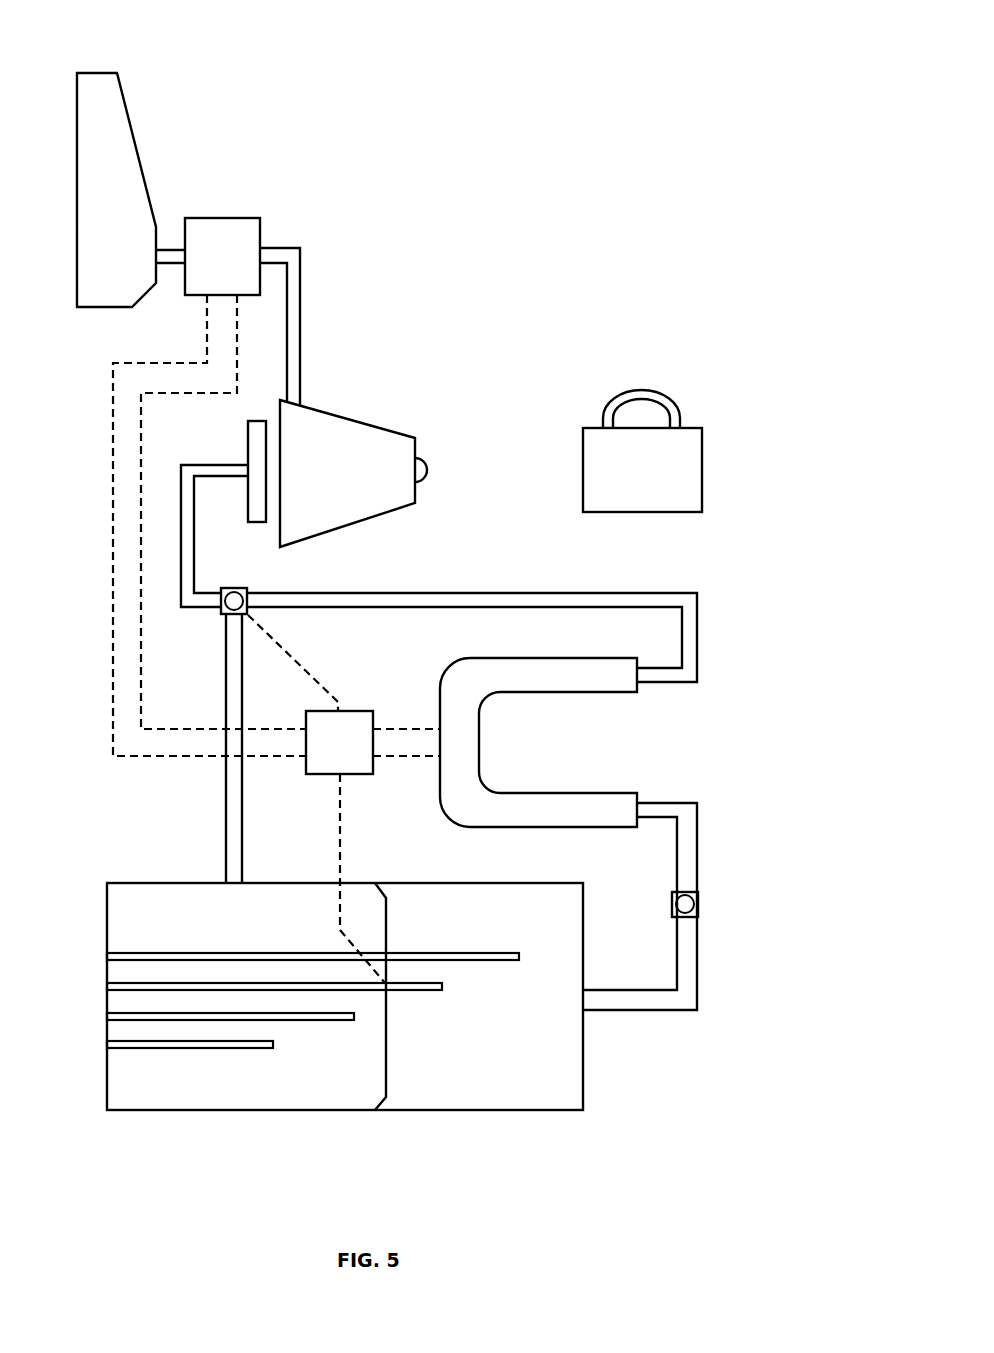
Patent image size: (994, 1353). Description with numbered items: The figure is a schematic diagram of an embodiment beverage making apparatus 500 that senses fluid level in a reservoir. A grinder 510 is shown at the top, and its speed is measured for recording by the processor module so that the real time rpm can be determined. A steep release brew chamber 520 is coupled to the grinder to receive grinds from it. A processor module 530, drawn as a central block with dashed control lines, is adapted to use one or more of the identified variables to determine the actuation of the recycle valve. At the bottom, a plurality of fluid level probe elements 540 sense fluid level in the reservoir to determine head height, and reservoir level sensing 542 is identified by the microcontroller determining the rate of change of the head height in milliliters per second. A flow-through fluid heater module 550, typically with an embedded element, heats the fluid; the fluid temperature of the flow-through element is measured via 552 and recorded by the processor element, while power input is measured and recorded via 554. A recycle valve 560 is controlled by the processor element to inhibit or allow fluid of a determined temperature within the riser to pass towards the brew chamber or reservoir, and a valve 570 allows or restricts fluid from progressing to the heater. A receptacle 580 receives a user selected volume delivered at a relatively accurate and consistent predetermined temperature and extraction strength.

The beverage making apparatus 500 is at (164, 73).
The grinder 510 is at (226, 232).
The steep release brew chamber 520 is at (371, 436).
The processor module 530 is at (345, 730).
The fluid level probe elements 540 is at (422, 939).
The reservoir level sensing 542 is at (338, 855).
The flow-through fluid heater module 550 is at (463, 746).
The fluid temperature measurement 552 is at (397, 758).
The power input measurement 554 is at (397, 727).
The recycle valve 560 is at (248, 589).
The valve 570 is at (700, 897).
The receptacle 580 is at (670, 460).